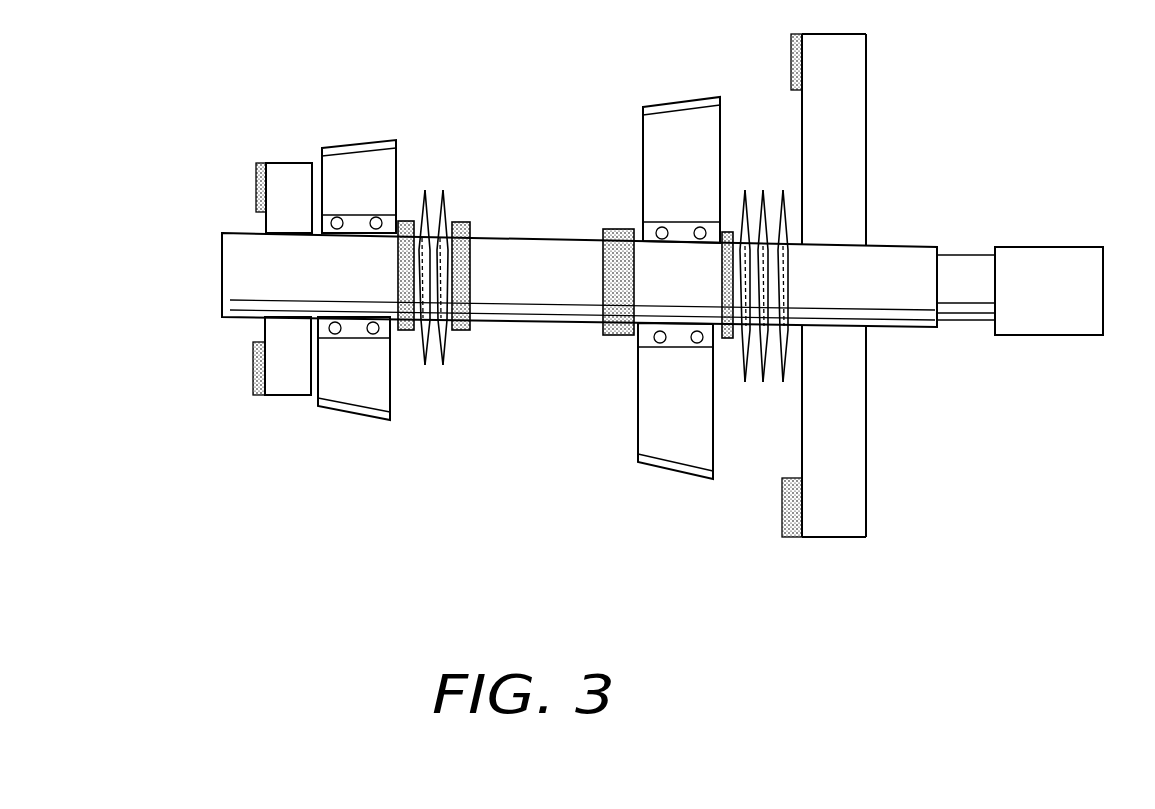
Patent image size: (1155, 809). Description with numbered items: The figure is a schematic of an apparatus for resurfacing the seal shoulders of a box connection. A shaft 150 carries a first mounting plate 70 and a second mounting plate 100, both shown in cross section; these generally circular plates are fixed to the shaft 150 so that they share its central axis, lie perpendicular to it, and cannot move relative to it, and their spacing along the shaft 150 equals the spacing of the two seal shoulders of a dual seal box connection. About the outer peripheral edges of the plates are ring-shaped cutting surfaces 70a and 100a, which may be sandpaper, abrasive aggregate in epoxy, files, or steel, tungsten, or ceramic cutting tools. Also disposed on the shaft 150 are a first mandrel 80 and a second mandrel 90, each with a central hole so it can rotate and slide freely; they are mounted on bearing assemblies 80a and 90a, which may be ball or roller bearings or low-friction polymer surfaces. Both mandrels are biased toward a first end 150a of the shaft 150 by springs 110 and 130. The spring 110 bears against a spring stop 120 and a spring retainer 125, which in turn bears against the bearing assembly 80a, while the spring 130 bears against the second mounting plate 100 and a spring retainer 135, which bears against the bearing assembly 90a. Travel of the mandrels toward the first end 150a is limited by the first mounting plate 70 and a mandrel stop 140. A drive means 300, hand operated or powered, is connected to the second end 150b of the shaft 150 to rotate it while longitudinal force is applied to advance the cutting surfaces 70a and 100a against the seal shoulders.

The first mounting plate 70 is at (283, 170).
The cutting surface 70a is at (256, 185).
The first mandrel 80 is at (353, 398).
The bearing assembly 80a is at (378, 221).
The second mandrel 90 is at (662, 450).
The bearing assembly 90a is at (660, 231).
The second mounting plate 100 is at (866, 500).
The cutting surface 100a is at (782, 518).
The spring 110 is at (443, 190).
The spring stop 120 is at (471, 222).
The spring retainer 125 is at (405, 331).
The spring 130 is at (745, 190).
The spring retainer 135 is at (726, 340).
The mandrel stop 140 is at (620, 336).
The shaft 150 is at (910, 248).
The first end of shaft 150a is at (222, 268).
The second end of shaft 150b is at (940, 330).
The drive means 300 is at (1065, 335).